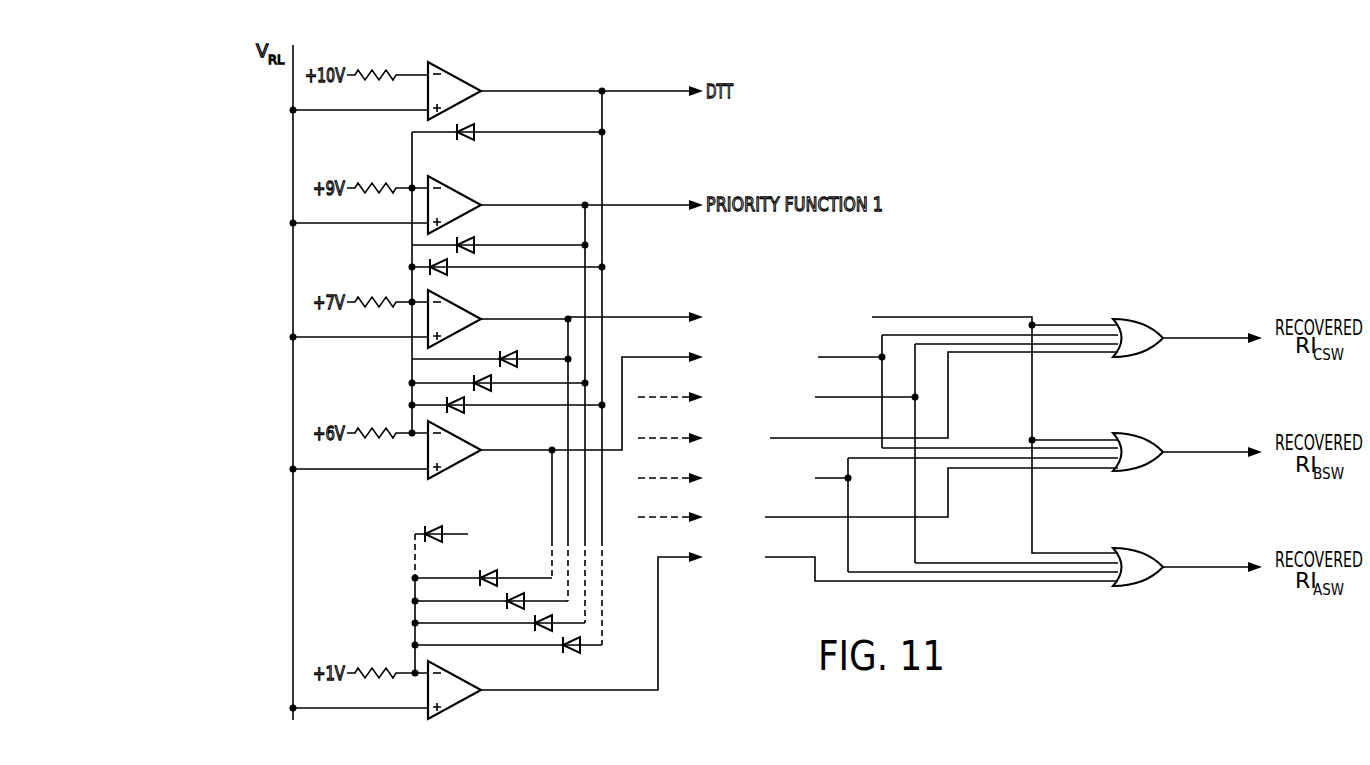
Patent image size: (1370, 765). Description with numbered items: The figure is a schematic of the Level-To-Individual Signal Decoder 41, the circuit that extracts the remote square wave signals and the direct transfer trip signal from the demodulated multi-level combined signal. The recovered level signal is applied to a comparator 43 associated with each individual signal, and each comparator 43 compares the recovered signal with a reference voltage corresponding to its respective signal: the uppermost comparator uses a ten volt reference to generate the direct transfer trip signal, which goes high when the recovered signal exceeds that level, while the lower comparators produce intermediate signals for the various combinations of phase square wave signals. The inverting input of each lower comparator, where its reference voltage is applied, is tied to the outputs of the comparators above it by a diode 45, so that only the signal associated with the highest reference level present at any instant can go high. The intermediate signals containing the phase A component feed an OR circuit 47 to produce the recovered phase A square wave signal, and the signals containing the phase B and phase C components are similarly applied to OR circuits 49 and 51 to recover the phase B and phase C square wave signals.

The Level-To-Individual Signal Decoder 41 is at (719, 267).
The comparator 43 is at (452, 676).
The diode 45 is at (466, 124).
The OR circuit 47 is at (1137, 548).
The OR circuit 49 is at (1134, 433).
The OR circuit 51 is at (1140, 320).